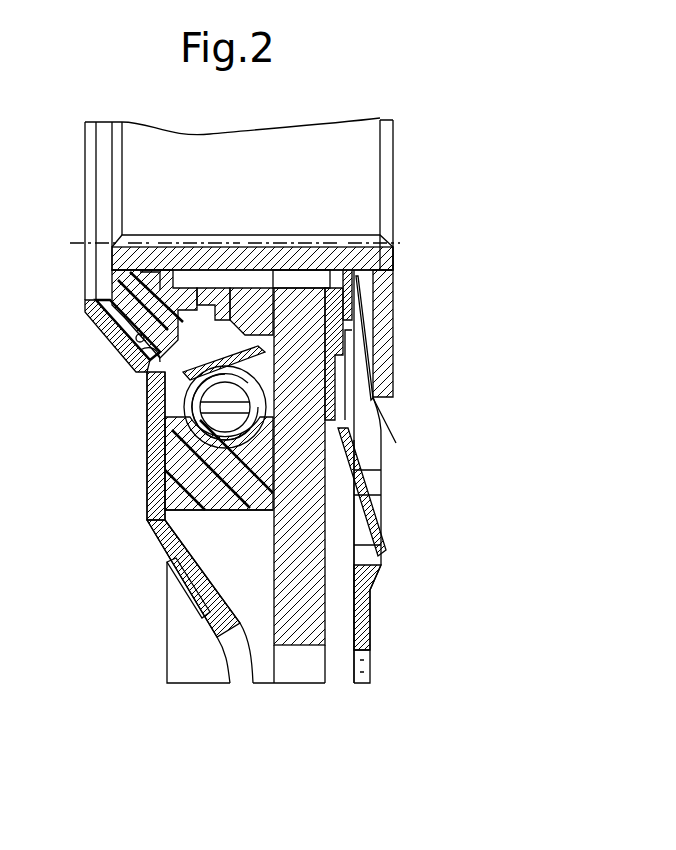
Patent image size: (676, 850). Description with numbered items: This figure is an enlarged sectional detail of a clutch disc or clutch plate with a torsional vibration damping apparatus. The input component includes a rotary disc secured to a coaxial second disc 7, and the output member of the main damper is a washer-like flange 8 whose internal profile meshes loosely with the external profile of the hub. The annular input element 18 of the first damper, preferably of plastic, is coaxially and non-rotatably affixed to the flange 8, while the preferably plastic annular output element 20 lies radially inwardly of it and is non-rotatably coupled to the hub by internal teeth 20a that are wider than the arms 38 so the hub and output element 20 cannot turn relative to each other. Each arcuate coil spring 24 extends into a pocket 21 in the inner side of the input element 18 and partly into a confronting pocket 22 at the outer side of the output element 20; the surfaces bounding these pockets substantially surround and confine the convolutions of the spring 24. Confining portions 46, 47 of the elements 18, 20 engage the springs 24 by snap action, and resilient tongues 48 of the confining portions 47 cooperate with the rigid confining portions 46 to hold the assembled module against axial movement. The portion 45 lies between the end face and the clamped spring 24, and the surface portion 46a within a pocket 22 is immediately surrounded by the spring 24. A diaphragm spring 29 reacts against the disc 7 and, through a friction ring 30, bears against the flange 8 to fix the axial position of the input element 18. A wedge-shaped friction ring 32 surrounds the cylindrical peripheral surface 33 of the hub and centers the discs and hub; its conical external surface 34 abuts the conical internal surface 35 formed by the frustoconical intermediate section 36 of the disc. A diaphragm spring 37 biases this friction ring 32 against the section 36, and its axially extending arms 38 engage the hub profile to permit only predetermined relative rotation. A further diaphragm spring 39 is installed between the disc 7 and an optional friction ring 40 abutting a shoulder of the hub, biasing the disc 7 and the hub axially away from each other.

The second disc 7 is at (362, 605).
The flange 8 is at (300, 650).
The annular input element 18 is at (175, 560).
The annular output element 20 is at (345, 315).
The internal teeth 20a is at (290, 262).
The arcuate pocket 21 is at (180, 500).
The arcuate pocket 22 is at (330, 372).
The energy storing device 24 is at (175, 475).
The diaphragm spring 29 is at (360, 490).
The friction ring 30 is at (345, 400).
The friction ring 32 is at (115, 290).
The cylindrical peripheral surface 33 is at (142, 268).
The conical external surface 34 is at (140, 370).
The conical internal surface 35 is at (120, 335).
The frustoconical annular intermediate section 36 is at (90, 318).
The diaphragm spring 37 is at (152, 398).
The arms 38 is at (215, 295).
The diaphragm spring 39 is at (365, 350).
The friction ring 40 is at (385, 290).
The inner side portion of input element 45 is at (190, 445).
The confining portion 46 is at (152, 522).
The pocket surface portion 46a is at (350, 450).
The confining portion 47 is at (185, 420).
The resilient tongue 48 is at (250, 300).